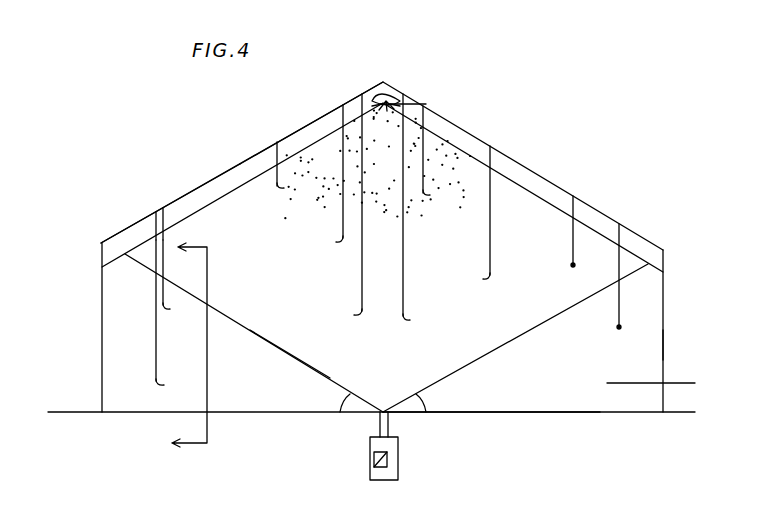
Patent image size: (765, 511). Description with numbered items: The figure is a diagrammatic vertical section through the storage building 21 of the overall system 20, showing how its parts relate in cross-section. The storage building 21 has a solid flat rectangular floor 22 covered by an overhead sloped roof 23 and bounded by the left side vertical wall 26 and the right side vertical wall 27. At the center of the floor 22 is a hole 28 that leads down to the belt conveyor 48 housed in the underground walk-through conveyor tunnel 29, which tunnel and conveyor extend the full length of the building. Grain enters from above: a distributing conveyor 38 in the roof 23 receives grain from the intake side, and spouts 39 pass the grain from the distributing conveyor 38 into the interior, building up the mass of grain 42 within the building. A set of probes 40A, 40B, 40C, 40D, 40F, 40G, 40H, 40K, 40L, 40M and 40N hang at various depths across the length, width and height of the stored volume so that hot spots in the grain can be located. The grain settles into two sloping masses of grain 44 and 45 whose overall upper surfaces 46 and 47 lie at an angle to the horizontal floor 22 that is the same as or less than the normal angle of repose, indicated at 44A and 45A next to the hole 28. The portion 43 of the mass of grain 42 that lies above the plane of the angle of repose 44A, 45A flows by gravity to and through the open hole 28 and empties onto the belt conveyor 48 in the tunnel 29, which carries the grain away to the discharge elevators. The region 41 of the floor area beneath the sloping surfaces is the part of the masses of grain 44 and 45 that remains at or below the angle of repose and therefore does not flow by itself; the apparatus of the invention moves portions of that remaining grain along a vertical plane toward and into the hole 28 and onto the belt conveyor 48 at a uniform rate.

The overall system 20 is at (422, 44).
The storage building 21 is at (663, 292).
The floor 22 is at (504, 412).
The sloped roof 23 is at (540, 184).
The left side vertical wall 26 is at (102, 382).
The right side vertical wall 27 is at (663, 348).
The hole 28 is at (384, 412).
The underground walk-through conveyor tunnel 29 is at (398, 477).
The distributing conveyor 38 is at (389, 92).
The spouts 39 is at (422, 105).
The probe 40A is at (301, 171).
The probe 40B is at (444, 155).
The probe 40C is at (321, 178).
The probe 40D is at (171, 244).
The probe 40F is at (185, 284).
The probe 40G is at (185, 318).
The probe 40H is at (334, 209).
The probe 40K is at (424, 211).
The probe 40L is at (572, 264).
The probe 40M is at (618, 332).
The drop line 40N is at (468, 216).
The floor area 41 is at (275, 380).
The mass of grain 42 is at (185, 137).
The portion of the mass of grain 43 is at (243, 208).
The mass of grain 44 is at (148, 344).
The angle of repose 44A is at (323, 399).
The mass of grain 45 is at (665, 386).
The angle of repose 45A is at (440, 400).
The upper surface 46 is at (330, 377).
The upper surface 47 is at (513, 336).
The belt conveyor 48 is at (373, 462).